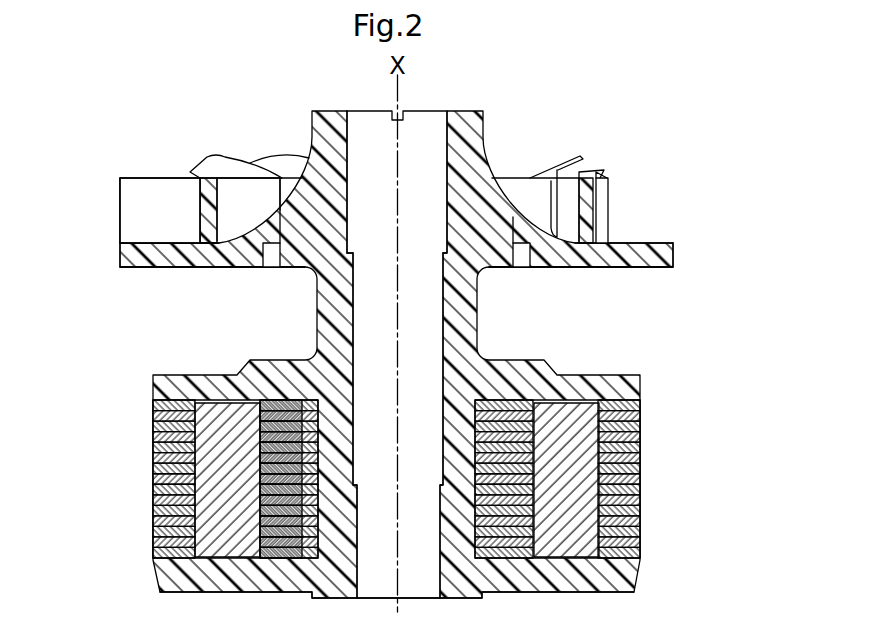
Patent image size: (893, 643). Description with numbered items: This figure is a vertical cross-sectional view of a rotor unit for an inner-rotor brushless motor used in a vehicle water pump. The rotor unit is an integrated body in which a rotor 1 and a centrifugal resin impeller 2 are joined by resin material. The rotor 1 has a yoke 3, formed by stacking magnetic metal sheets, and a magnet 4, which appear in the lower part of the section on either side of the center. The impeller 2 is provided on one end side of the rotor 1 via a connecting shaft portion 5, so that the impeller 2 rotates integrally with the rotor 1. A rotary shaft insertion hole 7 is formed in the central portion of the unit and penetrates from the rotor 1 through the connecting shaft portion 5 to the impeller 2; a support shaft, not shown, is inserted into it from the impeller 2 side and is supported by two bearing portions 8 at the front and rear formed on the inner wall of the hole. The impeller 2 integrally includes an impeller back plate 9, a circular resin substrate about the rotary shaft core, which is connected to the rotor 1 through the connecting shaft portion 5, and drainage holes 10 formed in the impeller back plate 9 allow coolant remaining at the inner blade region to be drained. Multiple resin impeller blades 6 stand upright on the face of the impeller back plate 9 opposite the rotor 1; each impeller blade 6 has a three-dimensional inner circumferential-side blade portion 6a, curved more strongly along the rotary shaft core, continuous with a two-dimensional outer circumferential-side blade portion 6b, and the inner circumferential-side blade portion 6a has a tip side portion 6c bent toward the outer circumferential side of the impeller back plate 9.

The rotor 1 is at (140, 483).
The impeller 2 is at (100, 234).
The yoke 3 is at (643, 474).
The magnet 4 is at (222, 415).
The connecting shaft portion 5 is at (468, 313).
The impeller blade 6 is at (118, 203).
The inner circumferential-side blade portion 6a is at (248, 193).
The outer circumferential-side blade portion 6b is at (160, 190).
The tip side portion 6c is at (222, 162).
The rotary shaft insertion hole 7 is at (372, 143).
The bearing portion 8 is at (447, 150).
The impeller back plate 9 is at (157, 268).
The drainage hole 10 is at (272, 267).